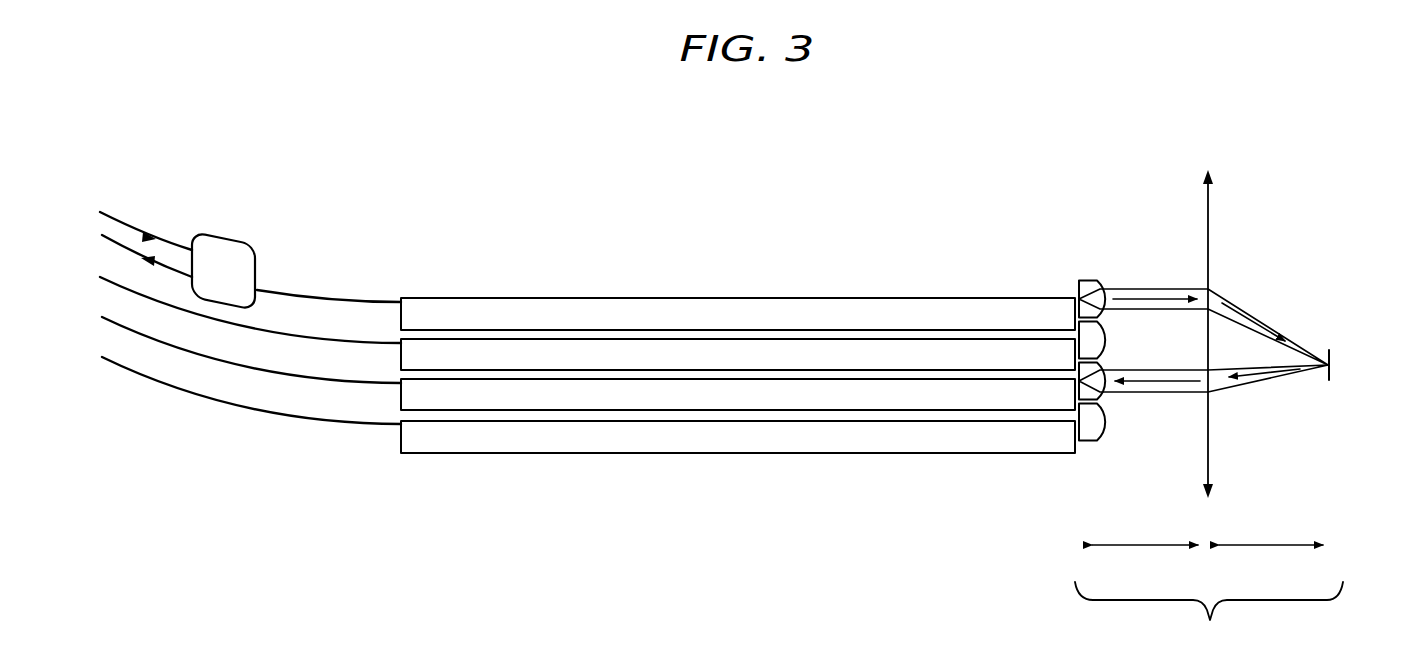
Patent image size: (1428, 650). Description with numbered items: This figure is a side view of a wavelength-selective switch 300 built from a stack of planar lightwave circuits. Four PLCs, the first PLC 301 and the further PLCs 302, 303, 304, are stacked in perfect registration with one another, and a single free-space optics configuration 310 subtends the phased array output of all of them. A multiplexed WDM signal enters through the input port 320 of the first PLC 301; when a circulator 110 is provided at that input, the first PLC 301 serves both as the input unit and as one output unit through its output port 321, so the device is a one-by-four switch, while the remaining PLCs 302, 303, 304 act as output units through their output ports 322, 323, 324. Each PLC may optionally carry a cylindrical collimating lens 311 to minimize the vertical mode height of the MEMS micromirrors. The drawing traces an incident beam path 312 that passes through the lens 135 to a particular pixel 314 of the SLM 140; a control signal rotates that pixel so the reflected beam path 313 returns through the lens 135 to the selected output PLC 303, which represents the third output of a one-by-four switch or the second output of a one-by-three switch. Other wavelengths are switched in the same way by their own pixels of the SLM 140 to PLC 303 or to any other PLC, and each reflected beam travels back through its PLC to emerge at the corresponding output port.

The switch 300 is at (445, 197).
The circulator 110 is at (223, 235).
The input port 320 is at (123, 216).
The output port 321 is at (124, 248).
The output port 322 is at (227, 301).
The output port 323 is at (227, 340).
The output port 324 is at (227, 381).
The first PLC 301 is at (738, 314).
The PLC 302 is at (738, 355).
The PLC 303 is at (738, 395).
The PLC 304 is at (738, 437).
The cylindrical collimating lens 311 is at (1089, 338).
The incident beam path 312 is at (1217, 293).
The reflected beam path 313 is at (1257, 385).
The lens 135 is at (1208, 313).
The pixel 314 is at (1332, 367).
The SLM 140 is at (1333, 276).
The free-space optics configuration 310 is at (1209, 597).